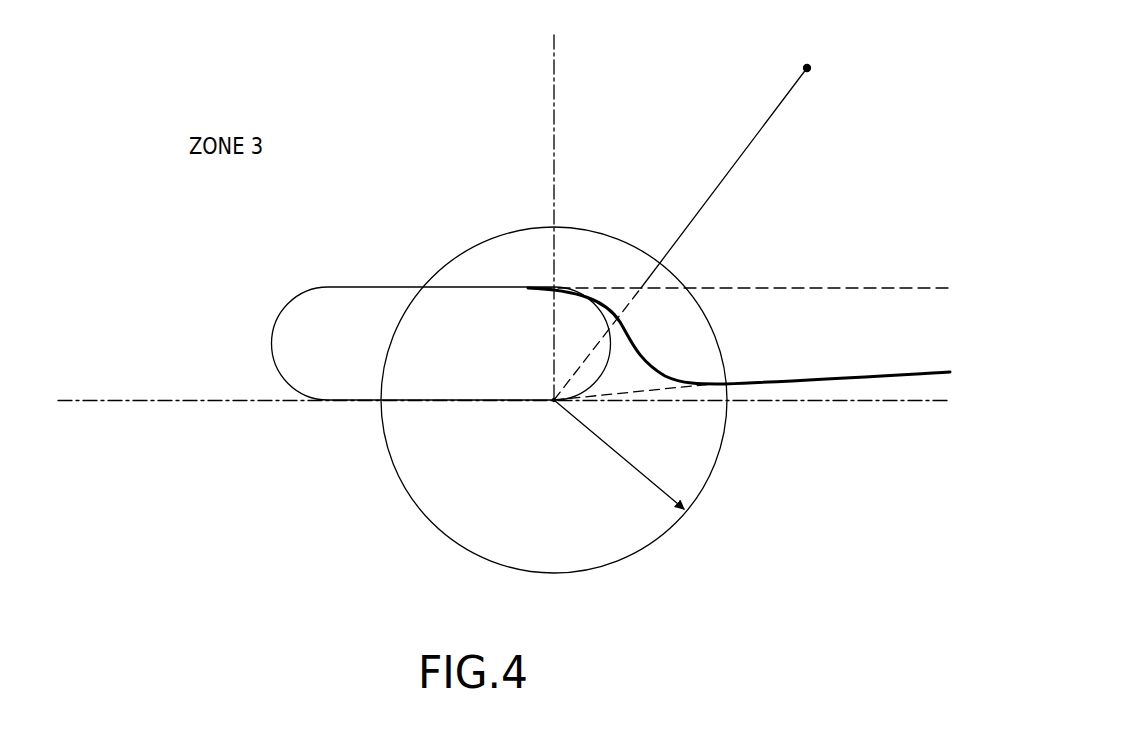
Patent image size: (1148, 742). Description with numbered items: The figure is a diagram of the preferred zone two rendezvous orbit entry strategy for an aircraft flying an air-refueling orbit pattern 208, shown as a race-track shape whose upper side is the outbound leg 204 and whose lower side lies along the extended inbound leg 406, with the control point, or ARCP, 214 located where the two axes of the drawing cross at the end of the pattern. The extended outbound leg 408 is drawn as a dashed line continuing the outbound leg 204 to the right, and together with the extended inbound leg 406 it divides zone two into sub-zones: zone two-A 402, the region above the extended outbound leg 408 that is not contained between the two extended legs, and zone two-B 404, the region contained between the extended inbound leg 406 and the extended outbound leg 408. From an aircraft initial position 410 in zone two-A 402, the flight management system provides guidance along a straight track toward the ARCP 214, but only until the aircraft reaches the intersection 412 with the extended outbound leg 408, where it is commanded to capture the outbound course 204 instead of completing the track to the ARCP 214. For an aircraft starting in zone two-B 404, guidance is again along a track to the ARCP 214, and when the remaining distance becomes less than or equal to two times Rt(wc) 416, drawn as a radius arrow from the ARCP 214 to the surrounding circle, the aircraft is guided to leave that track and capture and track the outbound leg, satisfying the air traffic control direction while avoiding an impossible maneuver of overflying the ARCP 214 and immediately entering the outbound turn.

The outbound leg 204 is at (359, 287).
The orbit pattern 208 is at (491, 232).
The control point (ARCP) 214 is at (554, 401).
The zone 2A 402 is at (855, 160).
The zone 2B 404 is at (879, 352).
The extended inbound leg 406 is at (764, 403).
The extended outbound leg 408 is at (817, 287).
The aircraft initial position 410 is at (807, 68).
The intersection with extended outbound leg 412 is at (643, 289).
The two times Rt(wc) 416 is at (609, 512).